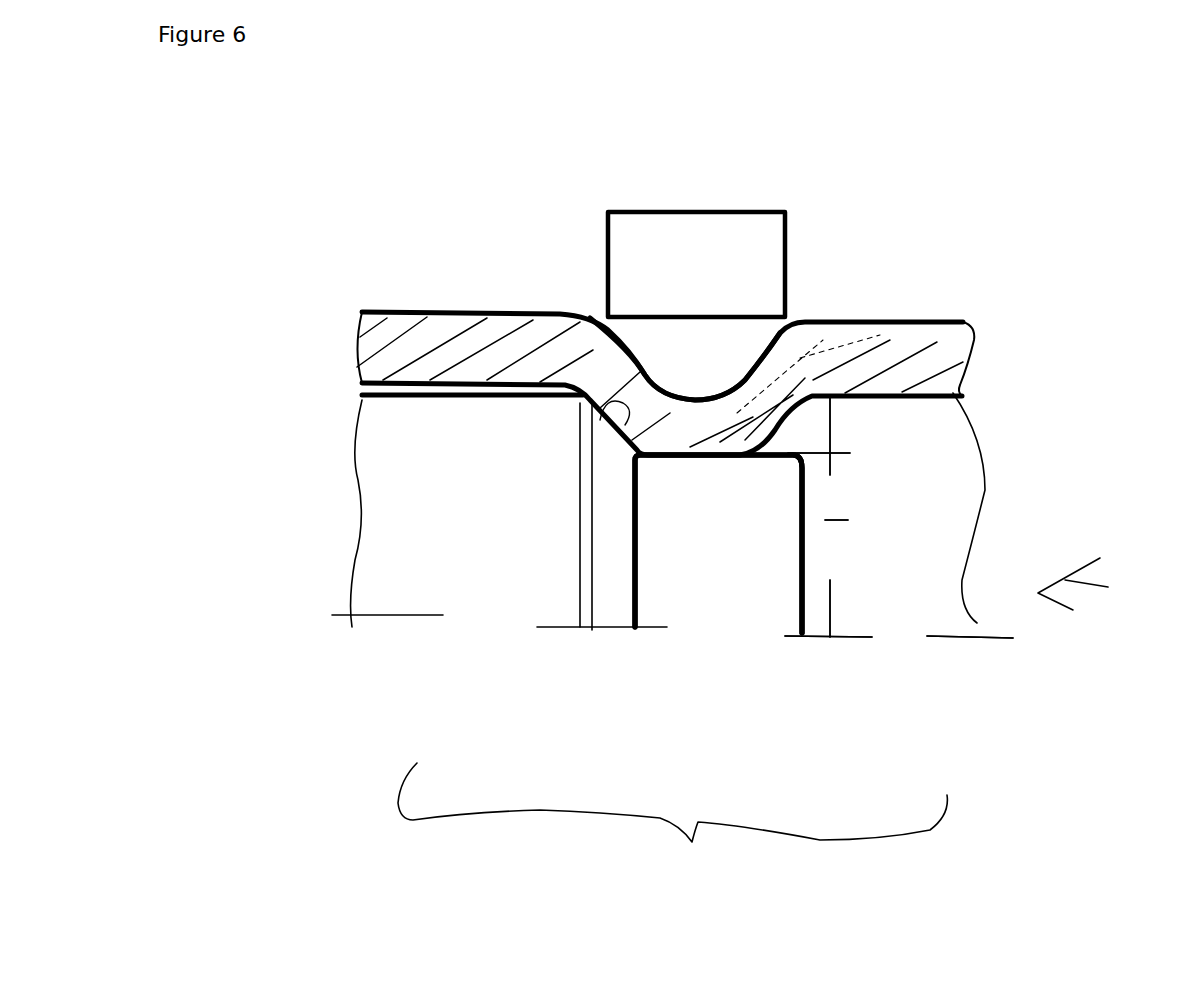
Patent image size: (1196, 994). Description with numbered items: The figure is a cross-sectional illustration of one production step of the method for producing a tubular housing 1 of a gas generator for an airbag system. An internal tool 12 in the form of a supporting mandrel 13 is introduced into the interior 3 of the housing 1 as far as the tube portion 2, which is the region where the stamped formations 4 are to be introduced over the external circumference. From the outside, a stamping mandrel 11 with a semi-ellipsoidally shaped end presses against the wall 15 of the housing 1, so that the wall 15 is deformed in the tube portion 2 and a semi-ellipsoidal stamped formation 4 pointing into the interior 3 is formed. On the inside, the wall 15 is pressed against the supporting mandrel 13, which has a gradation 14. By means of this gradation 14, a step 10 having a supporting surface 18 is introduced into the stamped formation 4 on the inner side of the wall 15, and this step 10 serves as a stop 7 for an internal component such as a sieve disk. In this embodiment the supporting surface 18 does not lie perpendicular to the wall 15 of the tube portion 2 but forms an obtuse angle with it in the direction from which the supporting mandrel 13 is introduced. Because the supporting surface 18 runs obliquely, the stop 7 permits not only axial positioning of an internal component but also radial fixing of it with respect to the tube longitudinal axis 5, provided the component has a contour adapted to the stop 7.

The housing 1 is at (403, 198).
The tube portion 2 is at (695, 922).
The interior 3 is at (1135, 622).
The stamped formation 4 is at (728, 378).
The tube longitudinal axis 5 is at (468, 528).
The stop 7 is at (776, 509).
The step 10 is at (776, 509).
The stamping mandrel 11 is at (753, 287).
The internal tool 12 is at (765, 545).
The supporting mandrel 13 is at (765, 545).
The gradation 14 is at (583, 403).
The wall 15 is at (393, 327).
The supporting surface 18 is at (776, 509).